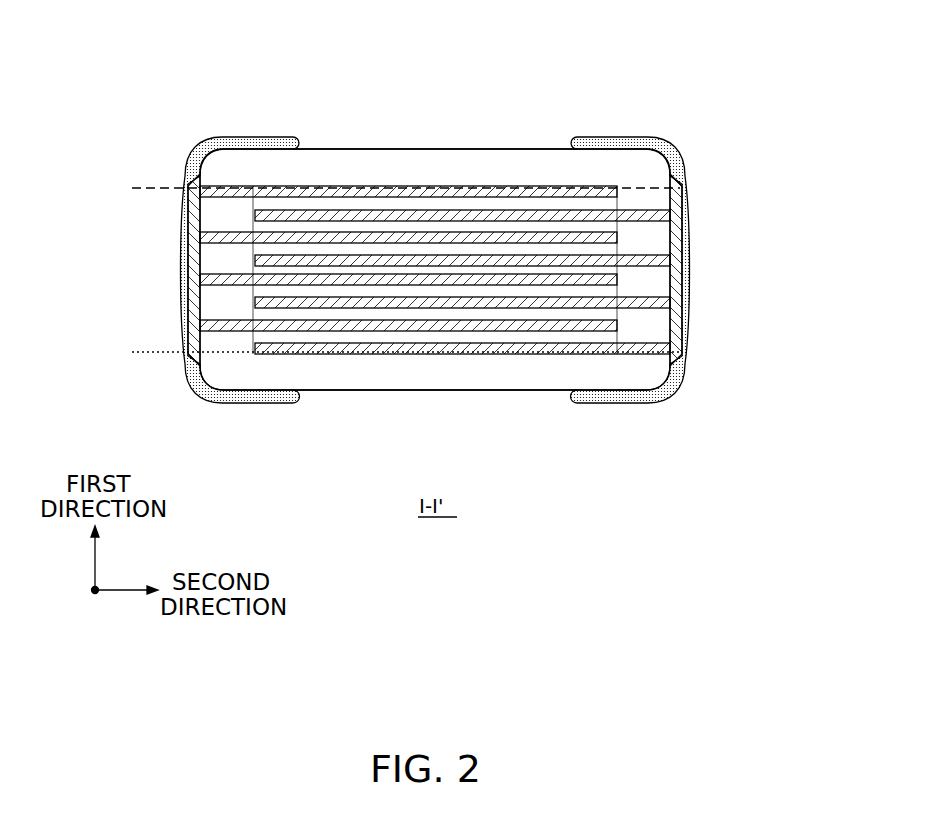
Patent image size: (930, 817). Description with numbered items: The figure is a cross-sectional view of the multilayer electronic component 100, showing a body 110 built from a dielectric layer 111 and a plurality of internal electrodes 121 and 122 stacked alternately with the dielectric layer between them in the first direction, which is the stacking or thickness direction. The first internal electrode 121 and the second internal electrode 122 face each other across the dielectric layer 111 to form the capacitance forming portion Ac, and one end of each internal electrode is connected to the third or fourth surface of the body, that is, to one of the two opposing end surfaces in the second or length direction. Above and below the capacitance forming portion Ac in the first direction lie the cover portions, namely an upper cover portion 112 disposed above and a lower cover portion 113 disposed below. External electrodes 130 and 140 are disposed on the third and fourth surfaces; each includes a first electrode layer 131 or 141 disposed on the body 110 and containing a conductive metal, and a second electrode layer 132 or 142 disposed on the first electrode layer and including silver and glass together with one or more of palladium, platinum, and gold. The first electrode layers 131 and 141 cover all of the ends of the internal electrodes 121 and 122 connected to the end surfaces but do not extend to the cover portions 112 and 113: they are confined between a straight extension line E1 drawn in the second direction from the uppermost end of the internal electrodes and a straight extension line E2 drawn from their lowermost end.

The multilayer electronic component 100 is at (190, 30).
The body 110 is at (335, 150).
The dielectric layer 111 is at (473, 203).
The upper cover portion 112 is at (364, 162).
The lower cover portion 113 is at (390, 381).
The first internal electrode 121 is at (411, 192).
The second internal electrode 122 is at (545, 217).
The external electrode 130 is at (115, 237).
The first electrode layer 131 is at (190, 252).
The second electrode layer 132 is at (185, 289).
The external electrode 140 is at (757, 237).
The first electrode layer 141 is at (688, 252).
The second electrode layer 142 is at (688, 289).
The capacitance forming portion Ac is at (513, 357).
The straight extension line E1 is at (391, 189).
The straight extension line E2 is at (391, 353).